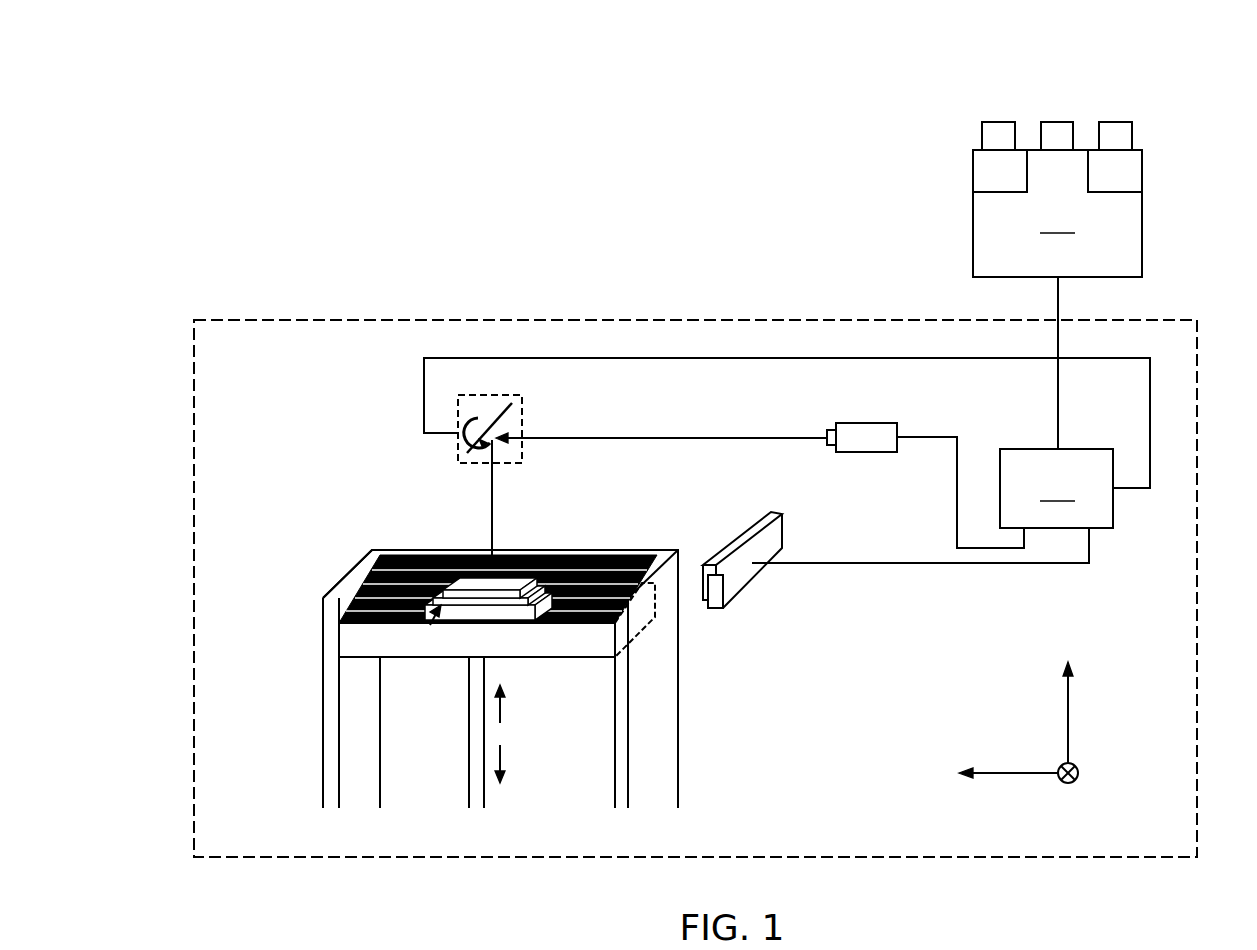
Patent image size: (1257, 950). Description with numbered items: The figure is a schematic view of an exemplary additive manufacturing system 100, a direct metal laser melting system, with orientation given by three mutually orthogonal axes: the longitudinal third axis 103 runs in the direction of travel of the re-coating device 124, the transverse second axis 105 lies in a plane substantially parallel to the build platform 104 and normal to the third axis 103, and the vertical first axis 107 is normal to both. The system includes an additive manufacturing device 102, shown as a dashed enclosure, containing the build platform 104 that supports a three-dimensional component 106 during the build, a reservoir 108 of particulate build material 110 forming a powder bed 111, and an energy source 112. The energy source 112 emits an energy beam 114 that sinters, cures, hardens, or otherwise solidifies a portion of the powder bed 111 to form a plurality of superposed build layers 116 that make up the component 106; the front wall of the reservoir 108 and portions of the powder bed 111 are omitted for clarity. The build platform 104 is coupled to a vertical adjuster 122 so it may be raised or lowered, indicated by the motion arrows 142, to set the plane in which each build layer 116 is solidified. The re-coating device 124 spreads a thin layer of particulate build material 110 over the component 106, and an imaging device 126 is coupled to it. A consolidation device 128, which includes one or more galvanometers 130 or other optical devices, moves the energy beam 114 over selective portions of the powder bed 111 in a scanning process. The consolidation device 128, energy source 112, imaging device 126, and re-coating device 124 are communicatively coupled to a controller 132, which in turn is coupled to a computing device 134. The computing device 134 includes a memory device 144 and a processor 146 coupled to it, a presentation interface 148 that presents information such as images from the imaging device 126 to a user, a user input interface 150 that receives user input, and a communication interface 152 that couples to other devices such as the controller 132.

The additive manufacturing system 100 is at (1136, 66).
The additive manufacturing device 102 is at (193, 425).
The third axis 103 is at (1020, 770).
The build platform 104 is at (583, 650).
The second axis 105 is at (1081, 772).
The three-dimensional component 106 is at (430, 625).
The first axis 107 is at (1072, 725).
The reservoir 108 is at (679, 686).
The particulate build material 110 is at (348, 583).
The powder bed 111 is at (586, 548).
The energy source 112 is at (870, 455).
The energy beam 114 is at (707, 442).
The build layers 116 is at (465, 608).
The vertical adjuster 122 is at (470, 782).
The re-coating device 124 is at (735, 590).
The imaging device 126 is at (718, 542).
The consolidation device 128 is at (456, 445).
The galvanometer 130 is at (510, 410).
The controller 132 is at (1056, 488).
The computing device 134 is at (1057, 213).
The vertical motion of build platform 142 is at (498, 770).
The memory device 144 is at (1142, 172).
The processor 146 is at (973, 172).
The presentation interface 148 is at (998, 122).
The user input interface 150 is at (1057, 122).
The communication interface 152 is at (1132, 130).